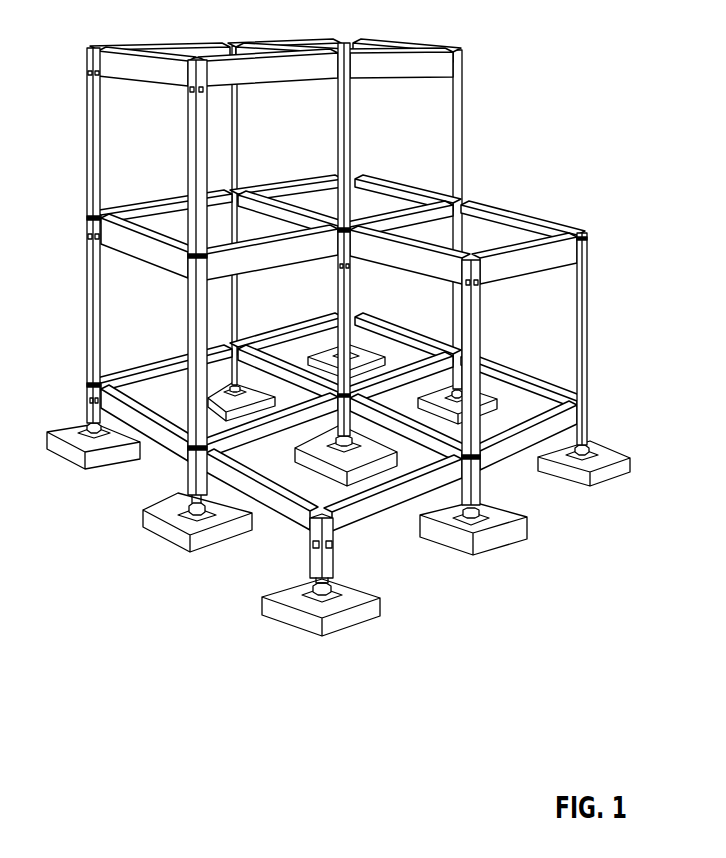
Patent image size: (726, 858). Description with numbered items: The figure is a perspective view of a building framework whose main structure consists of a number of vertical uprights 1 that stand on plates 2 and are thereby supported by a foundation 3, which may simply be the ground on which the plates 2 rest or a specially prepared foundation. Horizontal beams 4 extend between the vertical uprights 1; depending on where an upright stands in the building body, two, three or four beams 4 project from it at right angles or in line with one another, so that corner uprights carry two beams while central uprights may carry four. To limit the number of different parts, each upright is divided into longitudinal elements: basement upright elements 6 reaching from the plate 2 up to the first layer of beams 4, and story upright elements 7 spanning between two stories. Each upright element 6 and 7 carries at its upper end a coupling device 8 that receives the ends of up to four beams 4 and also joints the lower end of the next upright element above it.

The vertical upright 1 is at (480, 148).
The plate 2 is at (291, 593).
The foundation 3 is at (260, 640).
The beam 4 is at (518, 232).
The basement upright element 6 is at (310, 560).
The story upright element 7 is at (462, 97).
The coupling device 8 is at (590, 242).